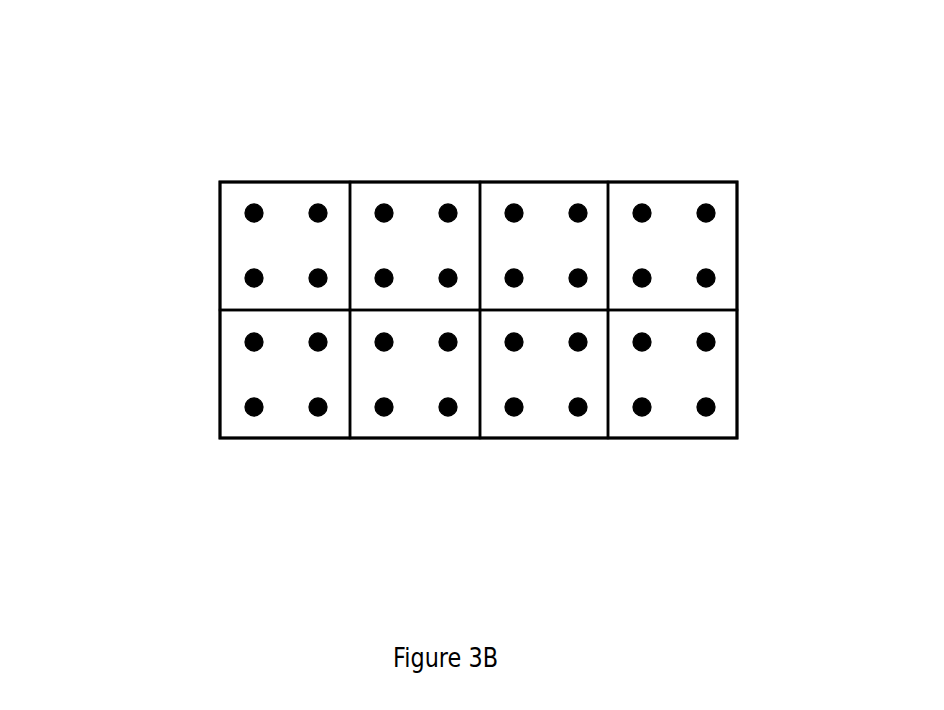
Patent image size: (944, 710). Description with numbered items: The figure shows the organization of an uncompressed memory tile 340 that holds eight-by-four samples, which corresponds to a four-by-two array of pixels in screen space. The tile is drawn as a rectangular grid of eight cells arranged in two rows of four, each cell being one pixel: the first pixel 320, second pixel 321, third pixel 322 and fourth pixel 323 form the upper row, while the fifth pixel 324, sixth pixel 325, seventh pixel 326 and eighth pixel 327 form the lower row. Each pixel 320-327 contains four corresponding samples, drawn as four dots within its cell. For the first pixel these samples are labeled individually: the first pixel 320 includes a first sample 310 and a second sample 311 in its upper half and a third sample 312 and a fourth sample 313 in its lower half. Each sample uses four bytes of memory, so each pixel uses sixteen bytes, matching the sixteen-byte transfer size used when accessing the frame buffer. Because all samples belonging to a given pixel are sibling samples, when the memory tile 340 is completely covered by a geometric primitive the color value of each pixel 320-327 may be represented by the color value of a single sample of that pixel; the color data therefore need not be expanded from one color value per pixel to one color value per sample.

The sample 0 310 is at (248, 208).
The sample 1 311 is at (325, 207).
The sample 2 312 is at (248, 272).
The sample 3 313 is at (311, 272).
The pixel 0 320 is at (270, 182).
The pixel 1 321 is at (430, 182).
The pixel 2 322 is at (543, 182).
The pixel 3 323 is at (672, 182).
The pixel 4 324 is at (287, 440).
The pixel 5 325 is at (418, 440).
The pixel 6 326 is at (547, 440).
The pixel 7 327 is at (672, 440).
The memory tile 340 is at (529, 231).